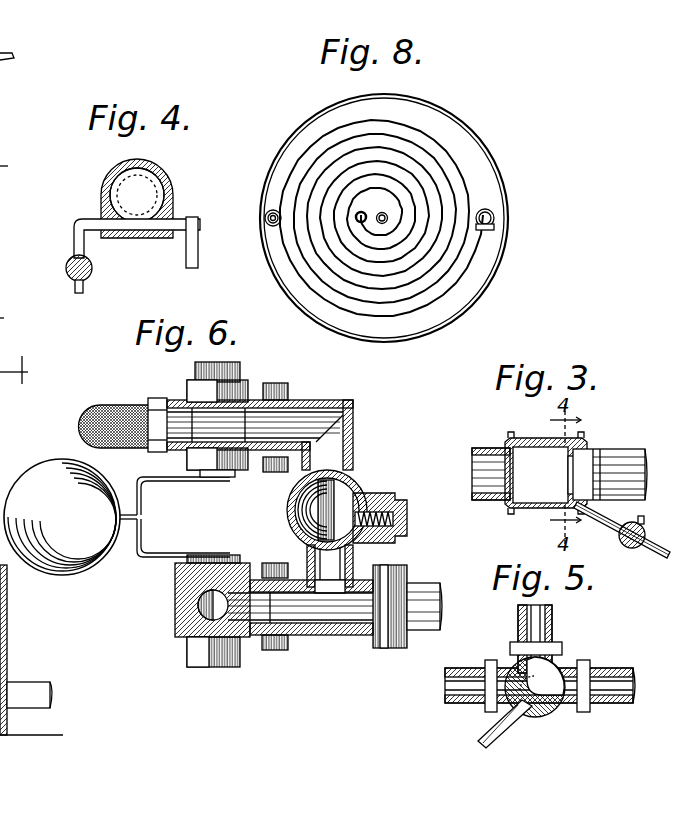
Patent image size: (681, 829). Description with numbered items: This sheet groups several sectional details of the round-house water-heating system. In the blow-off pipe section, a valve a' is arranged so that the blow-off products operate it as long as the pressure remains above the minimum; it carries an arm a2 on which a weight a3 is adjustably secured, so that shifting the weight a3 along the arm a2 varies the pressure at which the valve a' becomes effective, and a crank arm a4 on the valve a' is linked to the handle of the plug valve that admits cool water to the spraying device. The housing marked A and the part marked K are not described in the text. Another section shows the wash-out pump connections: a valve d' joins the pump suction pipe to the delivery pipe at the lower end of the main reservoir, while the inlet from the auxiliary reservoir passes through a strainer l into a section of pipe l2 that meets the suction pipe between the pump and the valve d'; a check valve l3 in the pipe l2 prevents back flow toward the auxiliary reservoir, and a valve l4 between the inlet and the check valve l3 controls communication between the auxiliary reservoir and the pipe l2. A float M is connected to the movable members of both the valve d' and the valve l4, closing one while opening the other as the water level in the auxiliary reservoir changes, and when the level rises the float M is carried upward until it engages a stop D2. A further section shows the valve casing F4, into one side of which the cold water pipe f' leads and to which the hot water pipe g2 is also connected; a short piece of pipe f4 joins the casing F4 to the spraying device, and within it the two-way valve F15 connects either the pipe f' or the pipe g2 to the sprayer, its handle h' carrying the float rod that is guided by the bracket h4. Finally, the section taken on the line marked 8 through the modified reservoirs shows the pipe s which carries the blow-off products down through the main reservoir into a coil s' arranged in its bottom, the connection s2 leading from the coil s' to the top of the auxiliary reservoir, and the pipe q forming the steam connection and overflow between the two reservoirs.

In FIG. 8, the coil s' is at (381, 205).
In FIG. 8, the pipe s is at (375, 206).
In FIG. 8, the pipe q is at (263, 216).
In FIG. 8, the connection s2 is at (497, 217).
In FIG. 4, the lever K is at (10, 58).
In FIG. 4, the stop D2 is at (12, 166).
In FIG. 4, the guiding bracket h4 is at (11, 315).
In FIG. 6, the section line 8 is at (20, 371).
In FIG. 4, the valve casing A is at (172, 185).
In FIG. 4, the valve a' is at (124, 185).
In FIG. 3, the valve a' is at (546, 473).
In FIG. 4, the arm a2 is at (75, 230).
In FIG. 3, the arm a2 is at (657, 558).
In FIG. 4, the weight a3 is at (66, 266).
In FIG. 3, the weight a3 is at (619, 537).
In FIG. 4, the crank arm a4 is at (196, 262).
In FIG. 6, the float M is at (62, 517).
In FIG. 6, the strainer l is at (110, 404).
In FIG. 6, the section of pipe l2 is at (345, 445).
In FIG. 6, the check valve l3 is at (346, 501).
In FIG. 6, the valve l4 is at (233, 386).
In FIG. 6, the valve d' is at (285, 622).
In FIG. 5, the pipe f' is at (532, 699).
In FIG. 5, the short piece of pipe f4 is at (520, 614).
In FIG. 5, the valve casing F4 is at (550, 660).
In FIG. 5, the pipe g2 is at (598, 668).
In FIG. 5, the two-way valve F15 is at (541, 715).
In FIG. 5, the handle h' is at (480, 730).